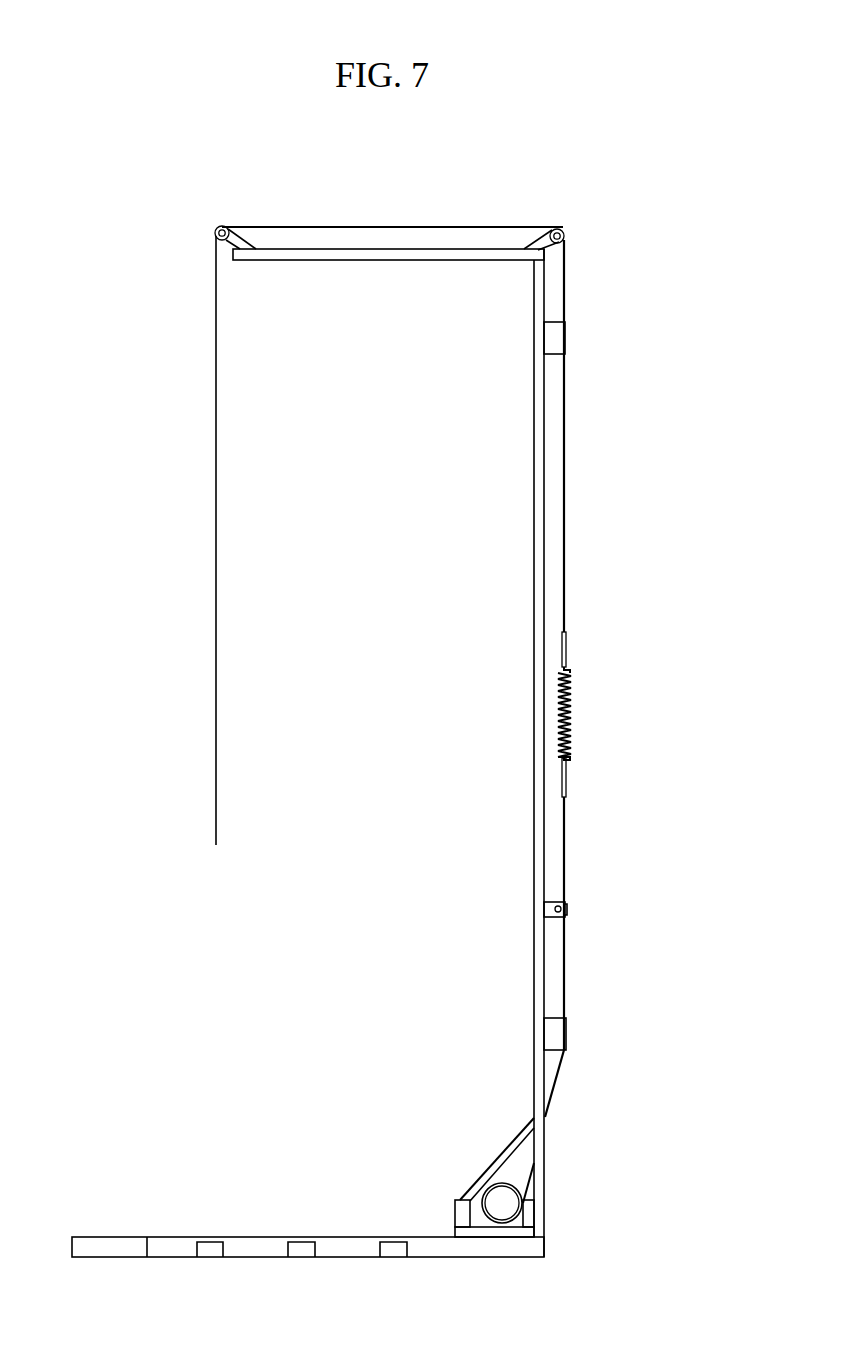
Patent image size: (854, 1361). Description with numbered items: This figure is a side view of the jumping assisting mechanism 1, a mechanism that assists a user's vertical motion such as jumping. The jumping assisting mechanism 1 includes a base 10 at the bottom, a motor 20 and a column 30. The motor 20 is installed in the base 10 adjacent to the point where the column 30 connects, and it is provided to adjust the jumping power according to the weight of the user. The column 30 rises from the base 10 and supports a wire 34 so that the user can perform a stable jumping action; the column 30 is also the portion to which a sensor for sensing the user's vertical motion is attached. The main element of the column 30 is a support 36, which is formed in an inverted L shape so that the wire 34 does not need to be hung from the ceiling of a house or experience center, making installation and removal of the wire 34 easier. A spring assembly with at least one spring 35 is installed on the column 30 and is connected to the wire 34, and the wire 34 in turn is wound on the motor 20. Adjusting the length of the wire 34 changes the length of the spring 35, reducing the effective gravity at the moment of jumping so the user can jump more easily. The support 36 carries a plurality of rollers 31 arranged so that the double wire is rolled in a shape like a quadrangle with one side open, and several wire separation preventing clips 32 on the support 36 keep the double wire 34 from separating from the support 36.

The jumping assisting mechanism 1 is at (160, 177).
The base 10 is at (166, 1226).
The motor 20 is at (468, 1183).
The column 30 is at (606, 288).
The roller 31 is at (545, 243).
The wire separation preventing clip 32 is at (555, 338).
The wire 34 is at (563, 590).
The spring 35 is at (567, 720).
The support 36 is at (537, 865).